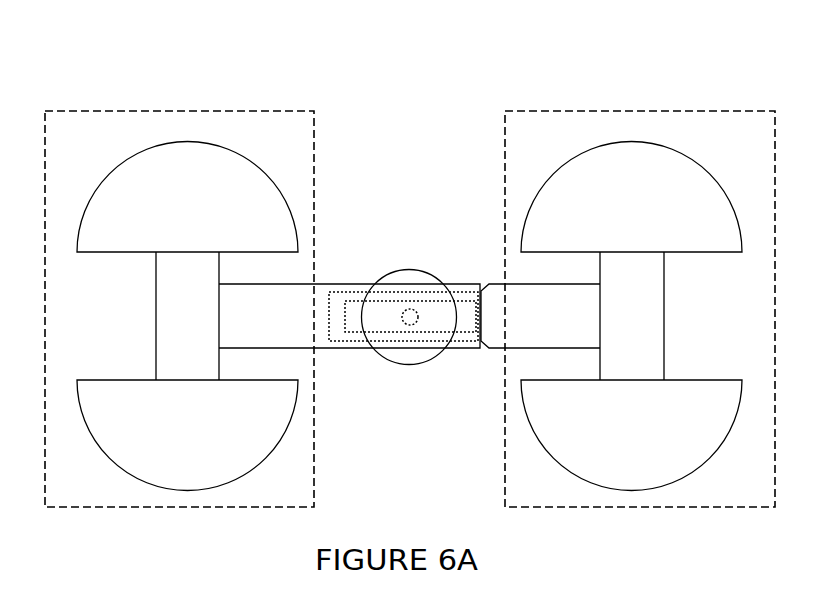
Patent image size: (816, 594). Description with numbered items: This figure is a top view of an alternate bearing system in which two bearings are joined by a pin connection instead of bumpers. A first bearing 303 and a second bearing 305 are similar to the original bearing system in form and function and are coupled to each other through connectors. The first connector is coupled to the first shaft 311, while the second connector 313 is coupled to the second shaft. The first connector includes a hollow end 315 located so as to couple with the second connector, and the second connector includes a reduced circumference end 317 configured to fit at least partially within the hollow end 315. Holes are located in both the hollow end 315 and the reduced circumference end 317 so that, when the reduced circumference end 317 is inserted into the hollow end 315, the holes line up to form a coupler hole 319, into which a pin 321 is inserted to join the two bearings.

The first bearing 303 is at (62, 110).
The second bearing 305 is at (520, 110).
The first shaft 311 is at (156, 332).
The second connector 313 is at (665, 332).
The hollow end 315 is at (455, 341).
The reduced circumference end 317 is at (355, 333).
The coupler hole 319 is at (417, 320).
The pin 321 is at (407, 269).